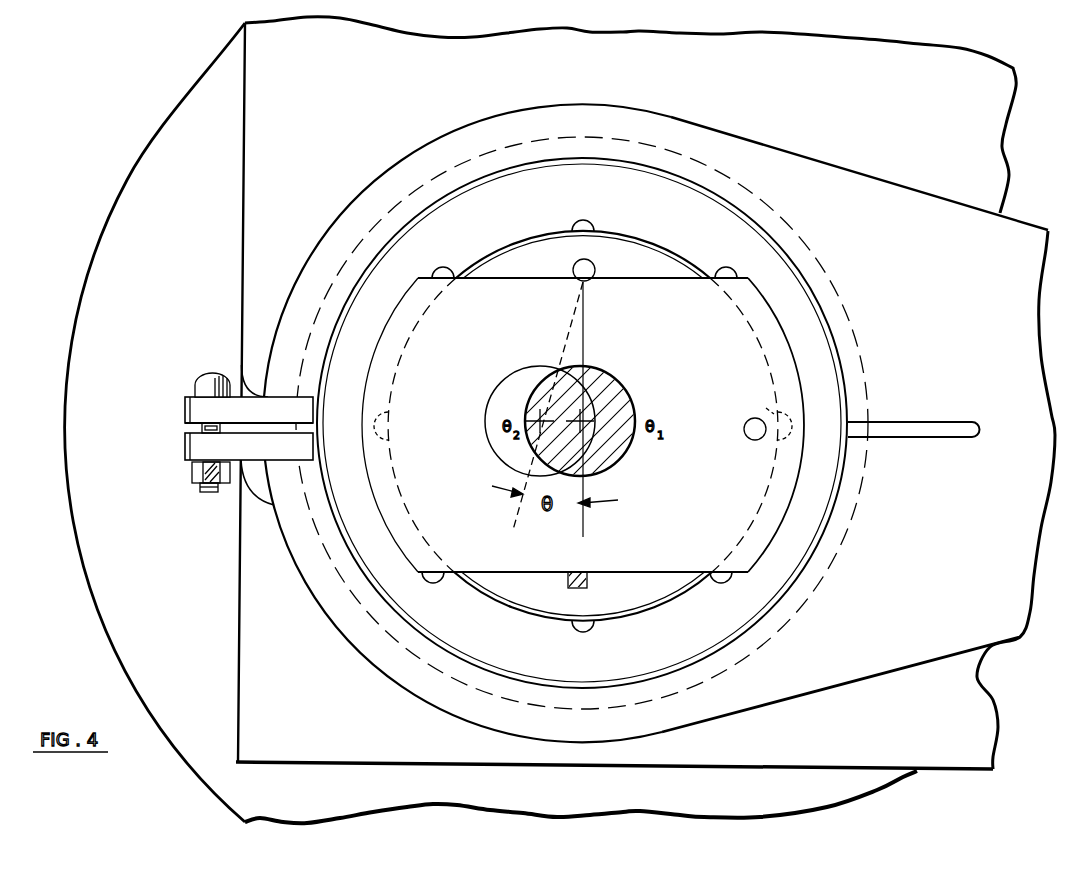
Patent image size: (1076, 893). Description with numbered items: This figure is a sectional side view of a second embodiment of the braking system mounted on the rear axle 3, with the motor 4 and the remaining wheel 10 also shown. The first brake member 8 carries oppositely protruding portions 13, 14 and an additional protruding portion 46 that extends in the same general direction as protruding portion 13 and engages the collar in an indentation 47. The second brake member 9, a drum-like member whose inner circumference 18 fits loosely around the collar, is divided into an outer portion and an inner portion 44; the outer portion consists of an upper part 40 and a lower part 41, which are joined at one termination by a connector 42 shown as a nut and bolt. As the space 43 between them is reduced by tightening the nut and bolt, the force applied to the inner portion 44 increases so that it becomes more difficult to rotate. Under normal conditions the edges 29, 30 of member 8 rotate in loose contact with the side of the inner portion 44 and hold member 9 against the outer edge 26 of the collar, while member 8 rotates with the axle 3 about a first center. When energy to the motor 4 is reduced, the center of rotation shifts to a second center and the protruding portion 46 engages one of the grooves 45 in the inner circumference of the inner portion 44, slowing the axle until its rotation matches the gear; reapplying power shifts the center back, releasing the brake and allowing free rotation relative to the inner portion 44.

The rear axle 3 is at (594, 413).
The motor 4 is at (848, 129).
The first brake member 8 is at (492, 342).
The second brake member 9 is at (973, 357).
The wheel 10 is at (113, 487).
The protruding portion 13 is at (588, 282).
The protruding portion 14 is at (586, 568).
The inner circumference 18 is at (600, 690).
The outer edge of collar 26 is at (703, 683).
The edge of member 8 29 is at (797, 358).
The edge of member 8 30 is at (383, 523).
The upper part of outer portion 40 is at (319, 313).
The lower part of outer portion 41 is at (333, 546).
The connector 42 is at (212, 388).
The space 43 is at (270, 436).
The inner portion 44 is at (757, 604).
The grooves 45 is at (574, 218).
The protruding portion 46 is at (749, 421).
The indentation 47 is at (767, 404).